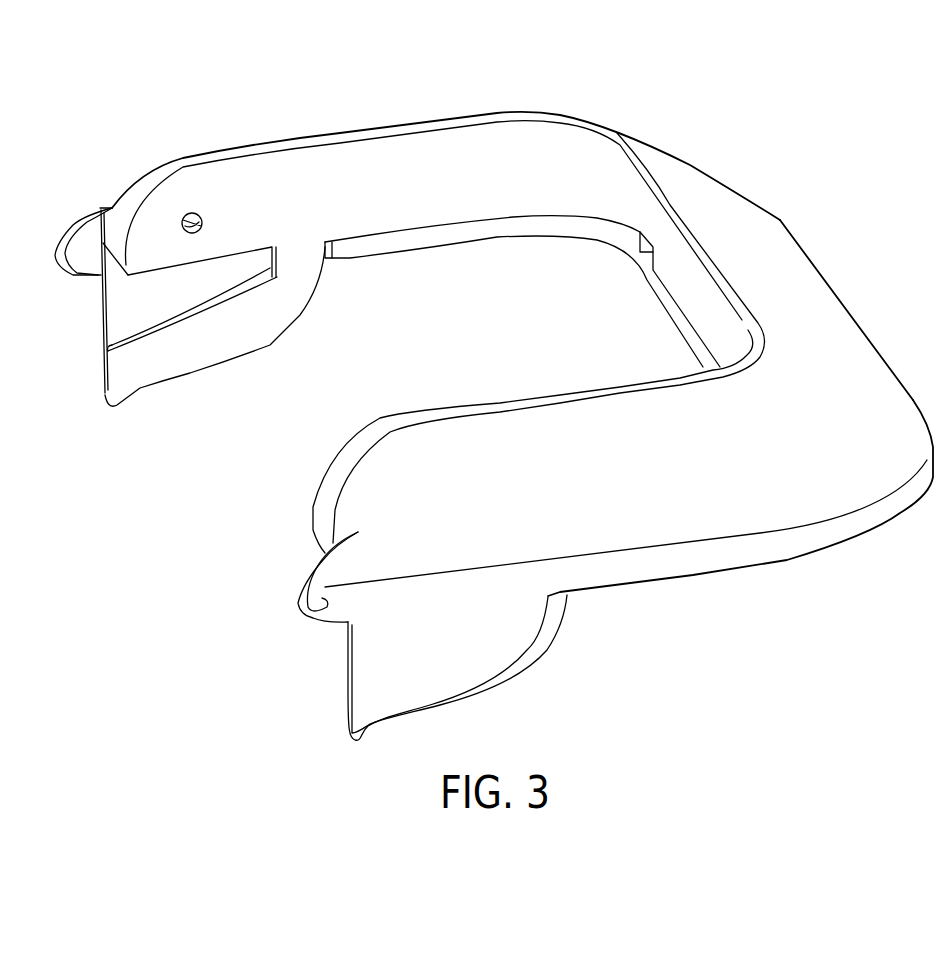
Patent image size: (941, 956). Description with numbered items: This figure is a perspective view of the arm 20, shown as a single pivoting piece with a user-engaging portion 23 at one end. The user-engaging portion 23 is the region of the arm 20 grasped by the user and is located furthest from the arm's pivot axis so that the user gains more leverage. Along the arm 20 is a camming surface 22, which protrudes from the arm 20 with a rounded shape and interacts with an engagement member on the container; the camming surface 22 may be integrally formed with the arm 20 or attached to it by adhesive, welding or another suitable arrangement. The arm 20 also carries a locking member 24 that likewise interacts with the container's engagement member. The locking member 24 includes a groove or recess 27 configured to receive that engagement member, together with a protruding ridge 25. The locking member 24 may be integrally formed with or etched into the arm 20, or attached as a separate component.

The arm 20 is at (817, 130).
The camming surface 22 is at (72, 225).
The user-engaging portion 23 is at (853, 312).
The locking member 24 is at (170, 378).
The protruding ridge 25 is at (125, 341).
The groove or recess 27 is at (228, 288).